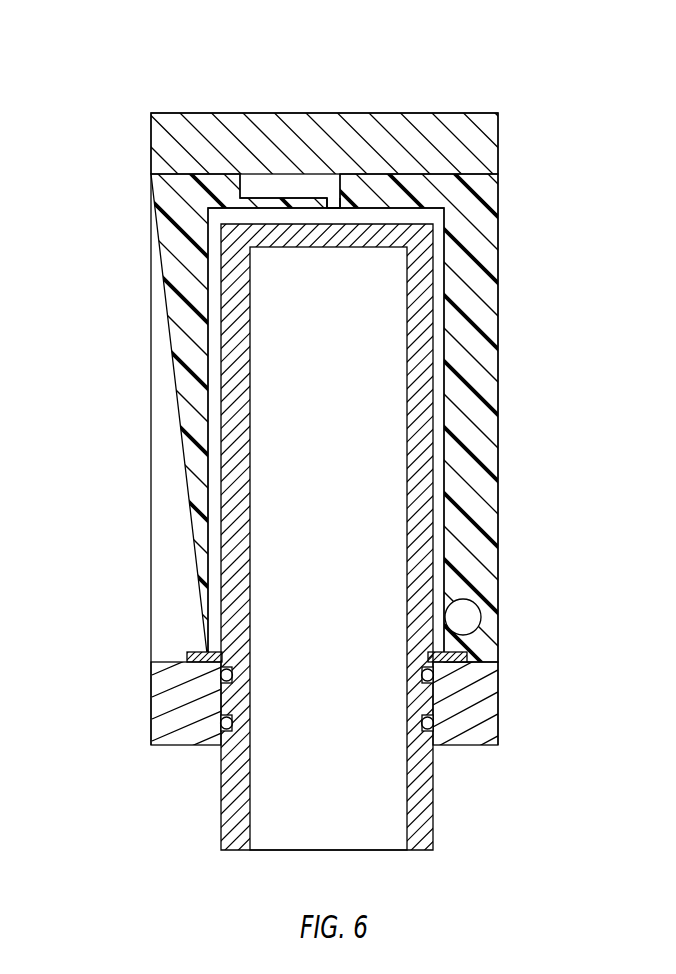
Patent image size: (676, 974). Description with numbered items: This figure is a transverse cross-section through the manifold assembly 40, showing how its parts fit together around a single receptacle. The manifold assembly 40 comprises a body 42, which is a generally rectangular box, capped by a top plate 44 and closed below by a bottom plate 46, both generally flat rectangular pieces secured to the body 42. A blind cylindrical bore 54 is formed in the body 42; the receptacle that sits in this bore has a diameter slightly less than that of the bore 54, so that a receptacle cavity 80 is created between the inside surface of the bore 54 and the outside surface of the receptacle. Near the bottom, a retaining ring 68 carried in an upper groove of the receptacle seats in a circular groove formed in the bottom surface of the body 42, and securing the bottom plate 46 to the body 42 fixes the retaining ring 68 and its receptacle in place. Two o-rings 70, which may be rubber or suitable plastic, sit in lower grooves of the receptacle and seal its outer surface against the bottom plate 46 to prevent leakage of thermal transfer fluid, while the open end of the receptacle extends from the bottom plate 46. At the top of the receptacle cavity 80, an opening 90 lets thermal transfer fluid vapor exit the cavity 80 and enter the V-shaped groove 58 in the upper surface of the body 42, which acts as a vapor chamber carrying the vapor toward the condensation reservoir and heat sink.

The manifold assembly 40 is at (76, 178).
The body 42 is at (152, 451).
The top plate 44 is at (345, 120).
The bottom plate 46 is at (165, 706).
The blind cylindrical bore 54 is at (285, 177).
The V-shaped groove 58 is at (308, 198).
The retaining ring 68 is at (187, 650).
The o-ring 70 is at (218, 722).
The receptacle cavity 80 is at (204, 302).
The opening 90 is at (328, 200).